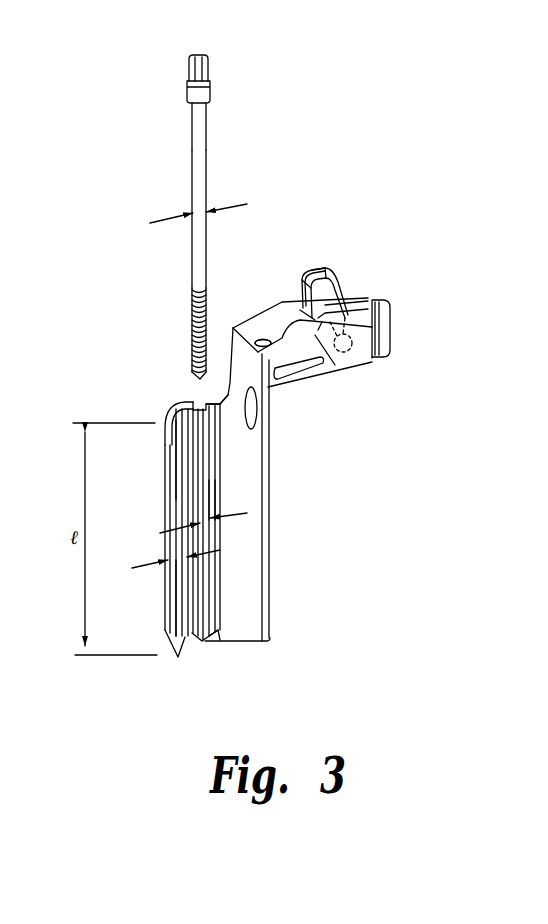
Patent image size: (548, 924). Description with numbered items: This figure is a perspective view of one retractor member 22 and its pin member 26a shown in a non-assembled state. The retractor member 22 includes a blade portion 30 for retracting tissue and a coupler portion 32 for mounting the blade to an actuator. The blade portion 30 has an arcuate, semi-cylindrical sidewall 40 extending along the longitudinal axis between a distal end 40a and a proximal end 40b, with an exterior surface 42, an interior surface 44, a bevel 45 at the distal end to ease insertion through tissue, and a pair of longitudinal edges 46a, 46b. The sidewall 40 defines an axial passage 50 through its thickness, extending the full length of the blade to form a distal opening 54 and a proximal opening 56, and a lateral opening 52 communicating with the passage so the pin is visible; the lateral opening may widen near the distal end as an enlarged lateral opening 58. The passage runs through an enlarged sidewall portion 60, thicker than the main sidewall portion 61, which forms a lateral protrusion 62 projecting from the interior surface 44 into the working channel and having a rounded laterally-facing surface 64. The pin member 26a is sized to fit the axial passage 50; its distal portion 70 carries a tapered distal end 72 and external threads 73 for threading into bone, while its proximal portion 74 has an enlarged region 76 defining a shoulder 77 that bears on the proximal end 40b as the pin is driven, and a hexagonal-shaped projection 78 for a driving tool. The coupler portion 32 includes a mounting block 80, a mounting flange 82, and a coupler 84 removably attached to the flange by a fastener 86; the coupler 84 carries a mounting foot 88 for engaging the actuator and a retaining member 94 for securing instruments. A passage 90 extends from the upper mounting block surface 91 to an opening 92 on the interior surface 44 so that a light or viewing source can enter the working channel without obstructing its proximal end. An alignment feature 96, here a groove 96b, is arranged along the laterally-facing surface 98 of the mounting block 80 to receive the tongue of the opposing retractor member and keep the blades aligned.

The retractor member 22 is at (308, 472).
The pin member 26a is at (166, 168).
The blade portion 30 is at (137, 407).
The coupler portion 32 is at (282, 264).
The sidewall 40 is at (167, 468).
The distal end 40a is at (188, 674).
The proximal end 40b is at (160, 398).
The exterior surface 42 is at (168, 545).
The interior surface 44 is at (235, 584).
The bevel 45 is at (272, 633).
The longitudinal edge 46a is at (178, 594).
The longitudinal edge 46b is at (269, 555).
The axial passage 50 is at (203, 399).
The lateral opening 52 is at (212, 498).
The distal opening 54 is at (201, 644).
The proximal opening 56 is at (197, 403).
The enlarged lateral opening 58 is at (217, 630).
The enlarged sidewall portion 60 is at (187, 513).
The main sidewall portion 61 is at (172, 483).
The lateral protrusion 62 is at (210, 474).
The laterally-facing surface 64 is at (197, 455).
The distal portion 70 is at (181, 307).
The tapered distal end 72 is at (192, 368).
The external threads 73 is at (204, 318).
The proximal portion 74 is at (168, 55).
The enlarged region 76 is at (186, 95).
The shoulder 77 is at (203, 109).
The hexagonal-shaped projection 78 is at (208, 65).
The mounting block 80 is at (310, 385).
The mounting flange 82 is at (307, 297).
The coupler 84 is at (362, 352).
The fastener 86 is at (348, 303).
The mounting foot 88 is at (392, 340).
The passage 90 is at (267, 336).
The upper mounting block surface 91 is at (250, 333).
The opening 92 is at (256, 418).
The retaining member 94 is at (318, 274).
The alignment feature 96 is at (288, 388).
The groove 96b is at (305, 383).
The laterally-facing surface 98 is at (317, 344).